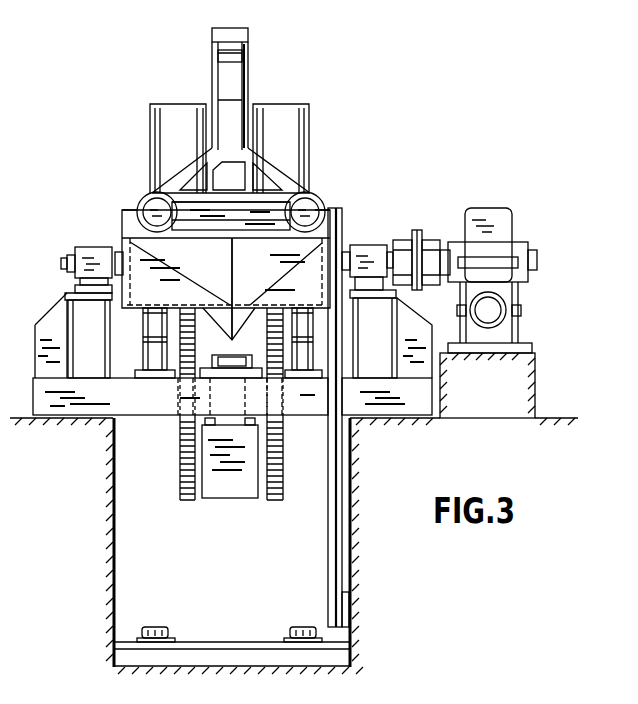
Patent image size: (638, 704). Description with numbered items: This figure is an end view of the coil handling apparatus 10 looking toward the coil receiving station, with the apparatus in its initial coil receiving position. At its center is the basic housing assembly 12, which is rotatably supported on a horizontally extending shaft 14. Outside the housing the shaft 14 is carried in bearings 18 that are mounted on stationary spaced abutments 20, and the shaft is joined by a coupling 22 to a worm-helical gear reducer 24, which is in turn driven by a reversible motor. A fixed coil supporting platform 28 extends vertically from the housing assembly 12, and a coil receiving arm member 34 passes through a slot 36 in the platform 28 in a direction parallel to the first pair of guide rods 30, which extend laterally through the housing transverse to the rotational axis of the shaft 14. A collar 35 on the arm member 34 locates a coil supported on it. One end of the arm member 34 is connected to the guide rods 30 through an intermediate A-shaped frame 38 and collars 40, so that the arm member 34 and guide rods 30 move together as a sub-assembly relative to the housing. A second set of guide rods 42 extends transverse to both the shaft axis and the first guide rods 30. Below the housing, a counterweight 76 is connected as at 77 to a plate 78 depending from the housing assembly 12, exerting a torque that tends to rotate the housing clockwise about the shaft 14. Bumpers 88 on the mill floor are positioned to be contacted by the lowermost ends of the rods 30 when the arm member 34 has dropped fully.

The coil handling apparatus 10 is at (350, 161).
The basic housing assembly 12 is at (325, 250).
The horizontally extending shaft 14 is at (344, 255).
The bearings 18 is at (92, 258).
The stationary spaced abutments 20 is at (48, 330).
The coupling 22 is at (427, 241).
The worm-helical gear reducer 24 is at (505, 224).
The fixed coil supporting platform 28 is at (173, 115).
The first pair of guide rods 30 is at (151, 208).
The coil receiving arm member 34 is at (246, 55).
The collar 35 is at (233, 36).
The slot 36 is at (233, 173).
The A-shaped frame 38 is at (182, 173).
The collars 40 is at (318, 196).
The second set of guide rods 42 is at (186, 500).
The counterweight 76 is at (232, 486).
The connection 77 is at (232, 345).
The plate 78 is at (233, 344).
The bumpers 88 is at (155, 627).